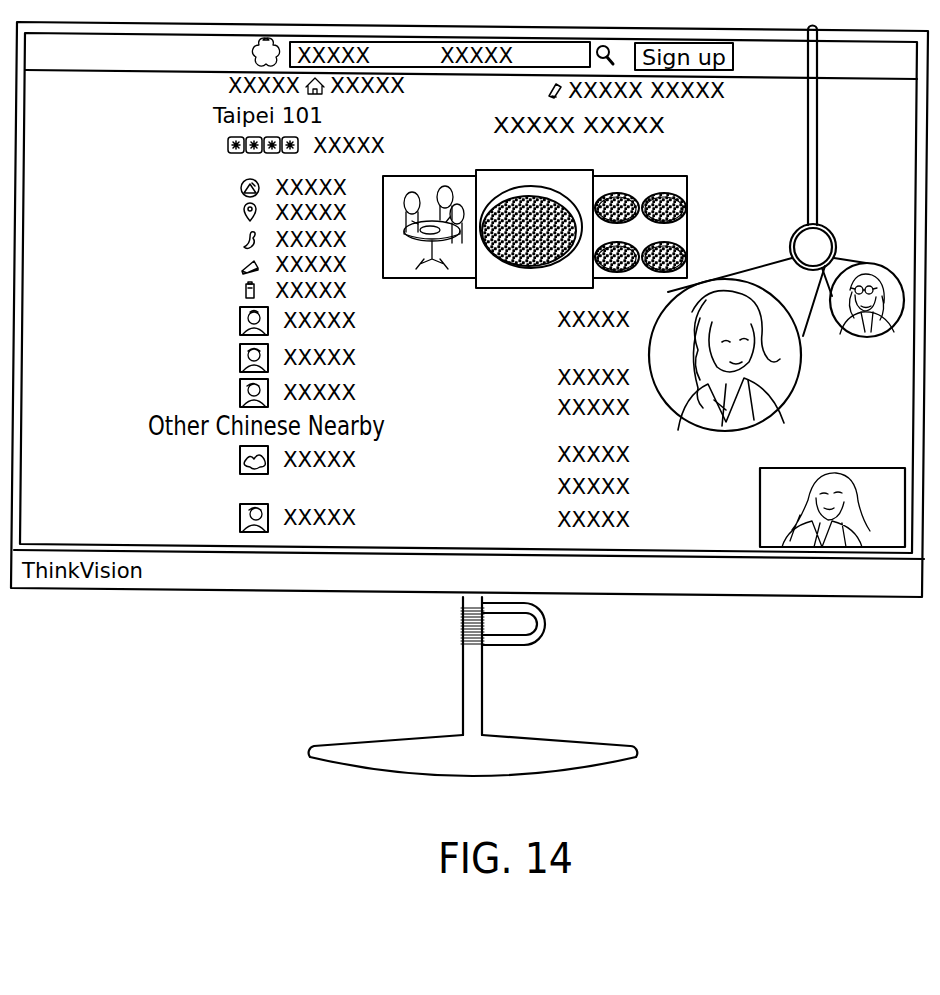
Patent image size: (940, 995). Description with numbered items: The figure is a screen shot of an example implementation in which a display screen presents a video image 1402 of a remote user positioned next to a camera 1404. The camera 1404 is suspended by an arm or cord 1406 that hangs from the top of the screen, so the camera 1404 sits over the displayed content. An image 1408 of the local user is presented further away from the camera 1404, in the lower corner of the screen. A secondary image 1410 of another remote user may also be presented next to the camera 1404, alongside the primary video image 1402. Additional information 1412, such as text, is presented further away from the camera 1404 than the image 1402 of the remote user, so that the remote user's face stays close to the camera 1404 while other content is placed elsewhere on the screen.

The video image of a remote user 1402 is at (684, 423).
The camera 1404 is at (790, 247).
The arm or cord 1406 is at (807, 128).
The image of the local user 1408 is at (760, 506).
The secondary image of another remote user 1410 is at (862, 338).
The additional information 1412 is at (208, 347).